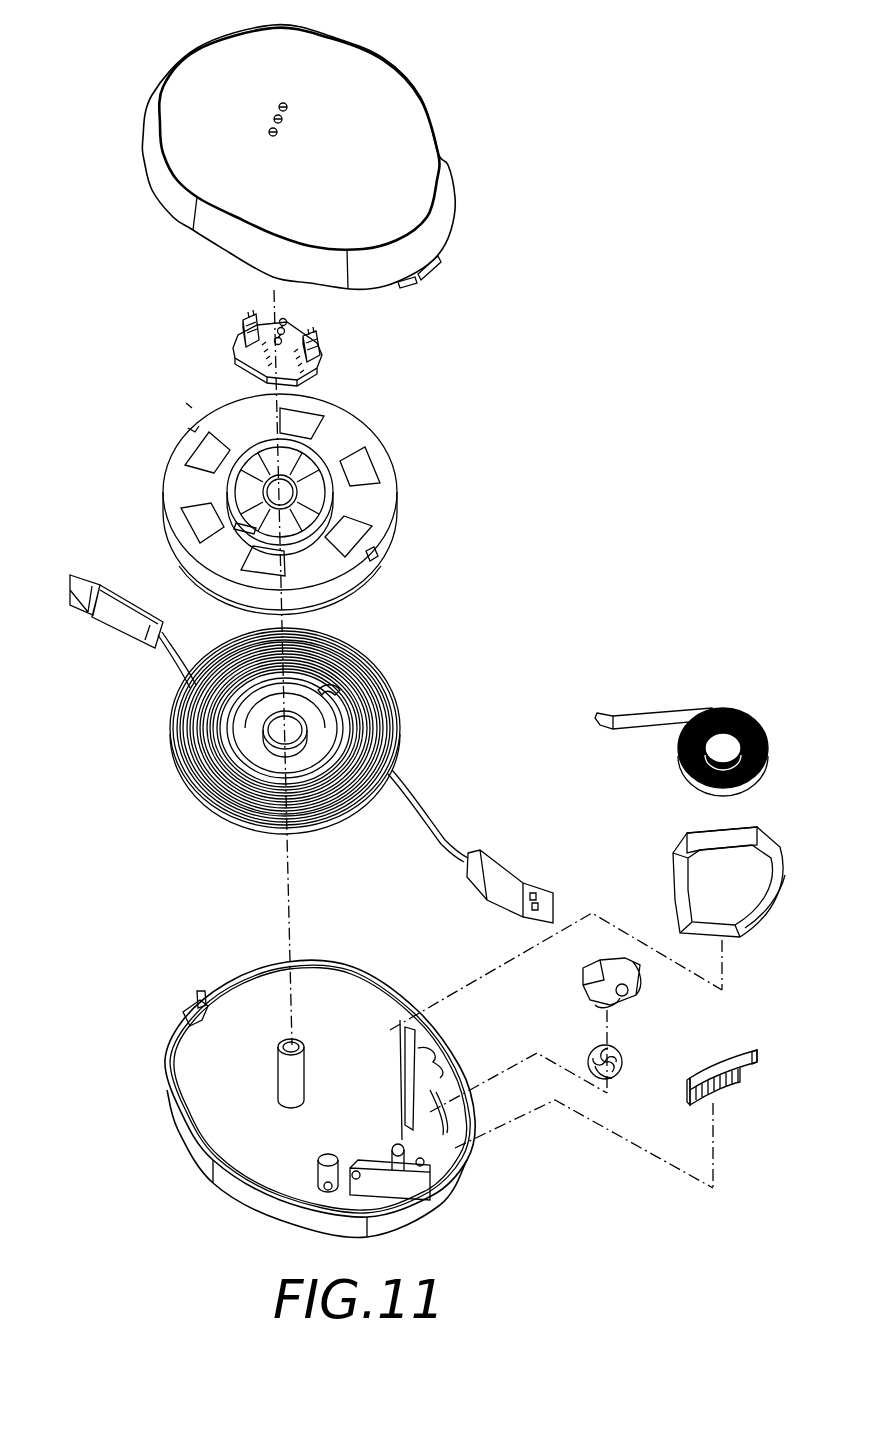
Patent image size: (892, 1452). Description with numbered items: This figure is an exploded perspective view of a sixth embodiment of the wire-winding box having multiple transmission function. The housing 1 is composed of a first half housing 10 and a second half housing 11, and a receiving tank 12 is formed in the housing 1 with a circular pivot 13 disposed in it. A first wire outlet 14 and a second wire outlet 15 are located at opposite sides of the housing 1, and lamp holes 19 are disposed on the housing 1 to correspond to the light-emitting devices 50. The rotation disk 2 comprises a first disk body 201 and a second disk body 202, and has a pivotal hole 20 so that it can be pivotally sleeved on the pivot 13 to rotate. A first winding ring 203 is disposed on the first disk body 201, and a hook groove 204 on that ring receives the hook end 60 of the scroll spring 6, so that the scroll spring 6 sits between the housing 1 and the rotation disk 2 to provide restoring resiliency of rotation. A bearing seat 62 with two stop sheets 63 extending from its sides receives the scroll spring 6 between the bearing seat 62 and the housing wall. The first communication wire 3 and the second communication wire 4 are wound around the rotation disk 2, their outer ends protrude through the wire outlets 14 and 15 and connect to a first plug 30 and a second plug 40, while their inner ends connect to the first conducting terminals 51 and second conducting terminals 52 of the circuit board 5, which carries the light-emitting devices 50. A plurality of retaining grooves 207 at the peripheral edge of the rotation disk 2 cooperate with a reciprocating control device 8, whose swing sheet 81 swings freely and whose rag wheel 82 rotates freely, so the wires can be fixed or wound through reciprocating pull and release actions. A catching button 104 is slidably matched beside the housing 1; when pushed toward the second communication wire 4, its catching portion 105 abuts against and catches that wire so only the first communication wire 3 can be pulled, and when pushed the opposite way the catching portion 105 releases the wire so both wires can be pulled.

The housing 1 is at (324, 1074).
The rotation disk 2 is at (287, 502).
The first communication wire 3 is at (167, 660).
The second communication wire 4 is at (436, 822).
The circuit board 5 is at (243, 364).
The scroll spring 6 is at (720, 710).
The reciprocating control device 8 is at (604, 1018).
The first half housing 10 is at (452, 172).
The second half housing 11 is at (348, 972).
The receiving tank 12 is at (238, 1012).
The circular pivot 13 is at (283, 1073).
The first wire outlet 14 is at (197, 1007).
The second wire outlet 15 is at (467, 1188).
The lamp holes 19 is at (287, 105).
The pivotal hole 20 is at (273, 492).
The first plug 30 is at (88, 608).
The second plug 40 is at (507, 865).
The light-emitting devices 50 is at (288, 324).
The first conducting terminals 51 is at (247, 332).
The second conducting terminals 52 is at (322, 350).
The hook end 60 is at (607, 715).
The bearing seat 62 is at (749, 870).
The stop sheets 63 is at (742, 840).
The swing sheet 81 is at (617, 982).
The rag wheel 82 is at (580, 1041).
The catching button 104 is at (742, 1064).
The catching portion 105 is at (757, 1050).
The first disk body 201 is at (177, 477).
The second disk body 202 is at (200, 587).
The first winding ring 203 is at (333, 502).
The hook groove 204 is at (247, 527).
The retaining grooves 207 is at (372, 558).